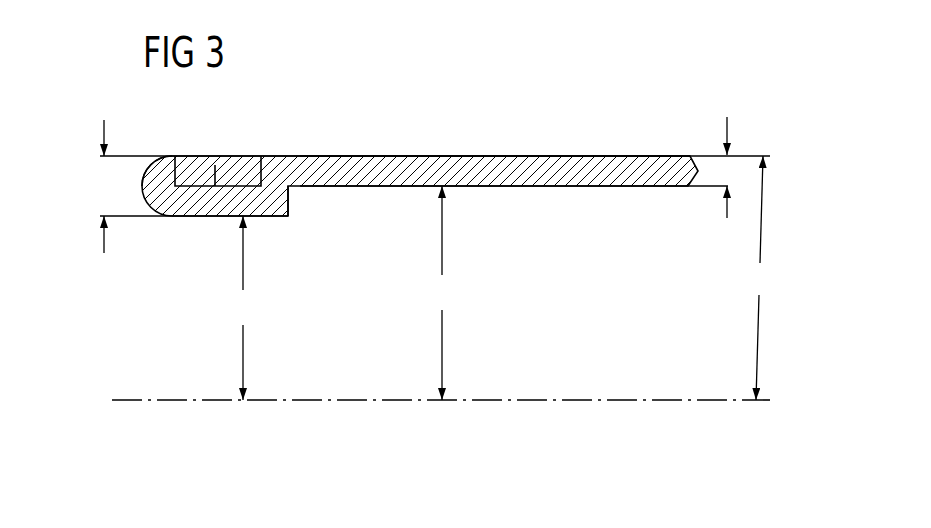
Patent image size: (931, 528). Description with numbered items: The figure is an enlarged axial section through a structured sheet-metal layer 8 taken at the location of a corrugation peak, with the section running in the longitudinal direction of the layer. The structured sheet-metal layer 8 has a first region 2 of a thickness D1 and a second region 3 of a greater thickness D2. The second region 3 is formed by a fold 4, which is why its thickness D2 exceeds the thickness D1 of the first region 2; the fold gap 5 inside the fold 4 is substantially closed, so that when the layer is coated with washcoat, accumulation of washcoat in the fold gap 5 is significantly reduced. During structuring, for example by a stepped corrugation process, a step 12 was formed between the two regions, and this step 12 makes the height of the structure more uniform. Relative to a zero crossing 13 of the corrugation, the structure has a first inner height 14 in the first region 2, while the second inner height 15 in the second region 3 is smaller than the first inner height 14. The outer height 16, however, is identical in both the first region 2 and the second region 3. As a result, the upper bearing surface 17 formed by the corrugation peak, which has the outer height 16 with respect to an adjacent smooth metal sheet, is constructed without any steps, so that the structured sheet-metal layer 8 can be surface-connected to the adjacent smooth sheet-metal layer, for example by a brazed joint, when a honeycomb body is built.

The first region 2 is at (545, 186).
The second region 3 is at (197, 156).
The fold 4 is at (195, 216).
The fold gap 5 is at (226, 156).
The structured sheet-metal layer 8 is at (562, 149).
The step 12 is at (290, 201).
The zero crossing 13 is at (548, 402).
The first inner height 14 is at (447, 293).
The second inner height 15 is at (249, 308).
The outer height 16 is at (765, 278).
The upper bearing surface 17 is at (407, 156).
The thickness of the first region D1 is at (727, 167).
The thickness of the second region D2 is at (103, 186).